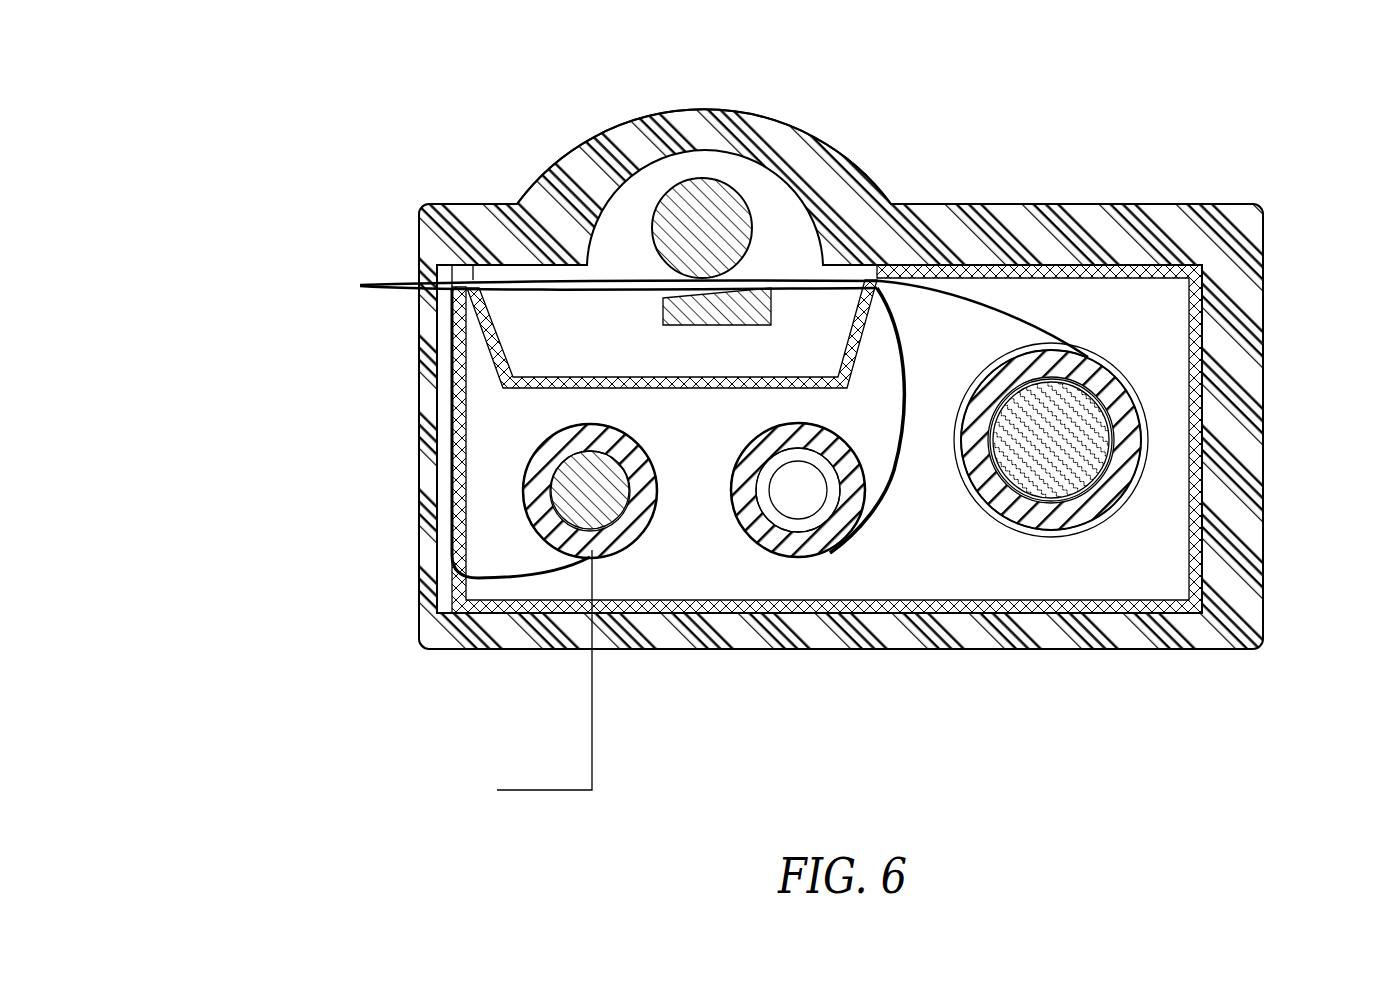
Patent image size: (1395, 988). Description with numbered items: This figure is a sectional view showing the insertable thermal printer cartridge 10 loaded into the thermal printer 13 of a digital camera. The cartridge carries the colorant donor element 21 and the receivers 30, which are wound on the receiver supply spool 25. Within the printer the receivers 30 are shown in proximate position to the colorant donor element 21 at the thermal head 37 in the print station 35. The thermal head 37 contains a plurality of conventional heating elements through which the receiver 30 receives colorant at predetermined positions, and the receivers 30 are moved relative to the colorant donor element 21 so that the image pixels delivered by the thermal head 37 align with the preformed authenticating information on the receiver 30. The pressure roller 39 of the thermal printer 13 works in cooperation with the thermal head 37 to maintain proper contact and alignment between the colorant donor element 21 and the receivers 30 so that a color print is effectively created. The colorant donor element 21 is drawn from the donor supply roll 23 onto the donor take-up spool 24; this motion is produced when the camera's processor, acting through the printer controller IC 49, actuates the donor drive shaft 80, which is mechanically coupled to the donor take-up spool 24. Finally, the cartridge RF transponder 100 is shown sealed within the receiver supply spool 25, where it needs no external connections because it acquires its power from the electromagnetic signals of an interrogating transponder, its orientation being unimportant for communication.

The thermal printer 13 is at (410, 200).
The insertable thermal printer cartridge 10 is at (600, 345).
The pressure roller 39 is at (717, 175).
The thermal head 37 is at (773, 317).
The print station 35 is at (773, 257).
The receivers 30 is at (1038, 322).
The colorant donor element 21 is at (903, 437).
The donor take-up spool 24 is at (647, 510).
The donor drive shaft 80 is at (627, 543).
The printer controller IC 49 is at (472, 698).
The donor supply roll 23 is at (810, 550).
The receiver supply spool 25 is at (1077, 513).
The cartridge RF transponder 100 is at (1087, 437).